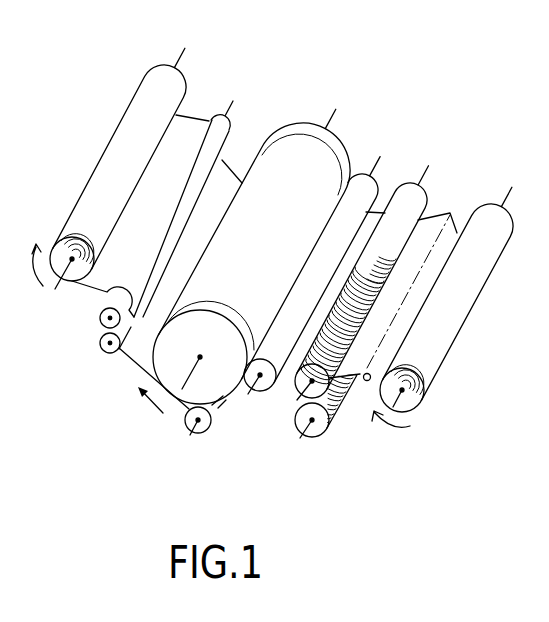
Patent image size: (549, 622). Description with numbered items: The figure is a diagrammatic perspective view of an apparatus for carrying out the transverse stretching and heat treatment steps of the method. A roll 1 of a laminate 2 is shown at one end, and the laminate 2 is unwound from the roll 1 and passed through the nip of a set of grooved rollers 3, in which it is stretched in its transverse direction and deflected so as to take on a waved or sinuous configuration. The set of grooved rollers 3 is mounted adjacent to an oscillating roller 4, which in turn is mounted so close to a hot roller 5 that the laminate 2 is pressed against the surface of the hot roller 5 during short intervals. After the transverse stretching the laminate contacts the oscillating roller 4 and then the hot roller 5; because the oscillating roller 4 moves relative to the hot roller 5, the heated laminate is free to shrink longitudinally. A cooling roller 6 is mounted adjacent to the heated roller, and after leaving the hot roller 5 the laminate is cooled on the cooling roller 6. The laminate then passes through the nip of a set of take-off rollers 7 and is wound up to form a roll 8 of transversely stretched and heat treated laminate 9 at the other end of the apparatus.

The roll 1 is at (492, 218).
The laminate 2 is at (457, 230).
The set of grooved rollers 3 is at (310, 385).
The oscillating roller 4 is at (365, 187).
The hot roller 5 is at (287, 130).
The cooling roller 6 is at (202, 426).
The set of take-off rollers 7 is at (110, 318).
The roll 8 is at (162, 73).
The transversely stretched and heat treated laminate 9 is at (98, 281).